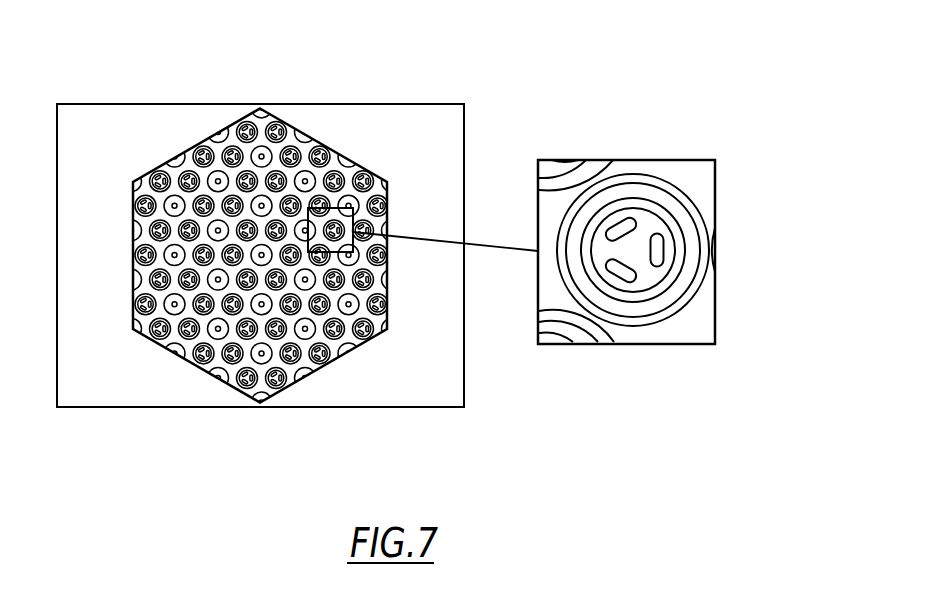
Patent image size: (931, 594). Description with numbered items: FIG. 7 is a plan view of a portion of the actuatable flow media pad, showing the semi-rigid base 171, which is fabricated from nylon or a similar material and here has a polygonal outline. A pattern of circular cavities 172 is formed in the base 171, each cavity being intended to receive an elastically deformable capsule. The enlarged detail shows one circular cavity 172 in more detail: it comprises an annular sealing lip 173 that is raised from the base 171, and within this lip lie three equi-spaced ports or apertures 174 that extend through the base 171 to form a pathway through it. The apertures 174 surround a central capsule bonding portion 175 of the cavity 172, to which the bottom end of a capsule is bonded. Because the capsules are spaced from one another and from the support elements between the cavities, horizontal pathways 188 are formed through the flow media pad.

The semi-rigid base 171 is at (358, 340).
The horizontal pathways 188 is at (407, 259).
The circular cavity 172 is at (589, 291).
The annular sealing lip 173 is at (686, 303).
The apertures 174 is at (652, 246).
The capsule bonding portion 175 is at (636, 257).